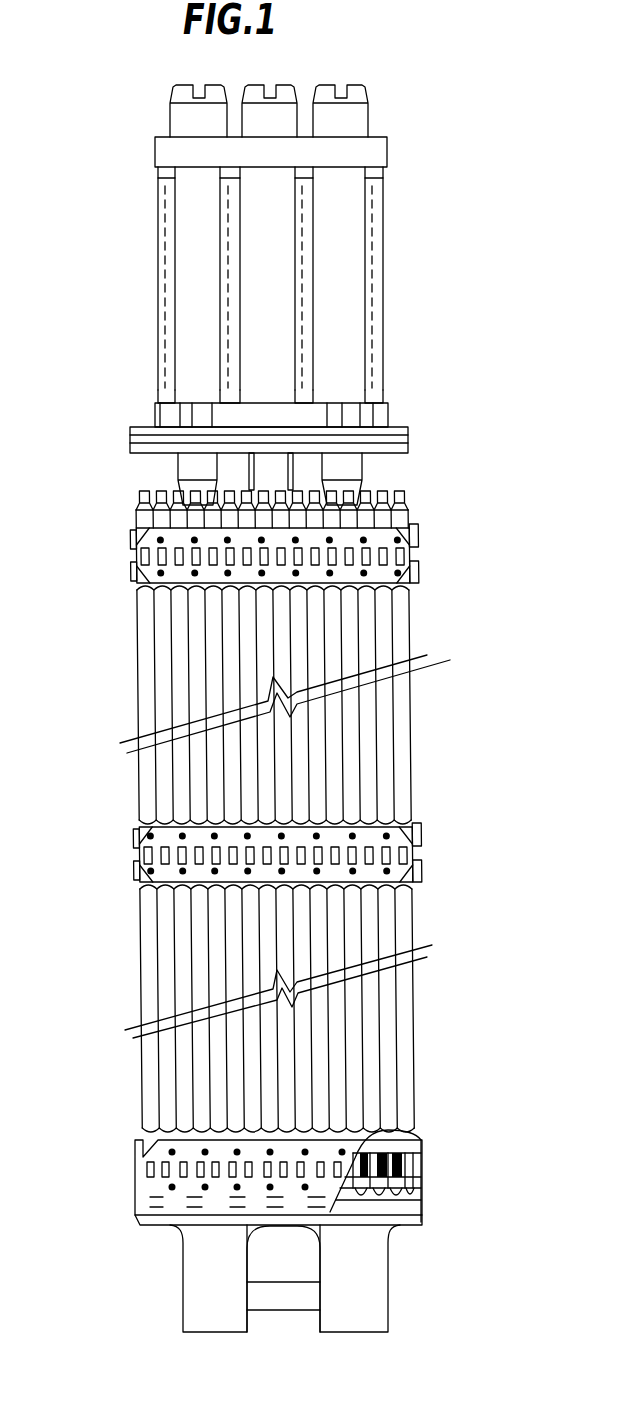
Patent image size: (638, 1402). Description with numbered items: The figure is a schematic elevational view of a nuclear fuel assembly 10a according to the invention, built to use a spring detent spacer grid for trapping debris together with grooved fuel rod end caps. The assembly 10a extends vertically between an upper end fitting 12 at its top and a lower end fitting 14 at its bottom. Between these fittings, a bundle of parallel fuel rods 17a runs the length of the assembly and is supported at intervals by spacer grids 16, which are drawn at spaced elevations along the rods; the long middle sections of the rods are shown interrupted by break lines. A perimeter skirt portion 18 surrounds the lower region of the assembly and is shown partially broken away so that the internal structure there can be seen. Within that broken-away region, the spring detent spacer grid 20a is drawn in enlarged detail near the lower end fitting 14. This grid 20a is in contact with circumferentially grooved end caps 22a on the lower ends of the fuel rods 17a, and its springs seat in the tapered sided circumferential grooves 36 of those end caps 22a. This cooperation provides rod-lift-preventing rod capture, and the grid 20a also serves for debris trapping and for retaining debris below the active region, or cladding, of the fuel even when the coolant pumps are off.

The fuel assembly 10a is at (118, 165).
The upper end fitting 12 is at (397, 430).
The spacer grids 16 is at (420, 553).
The fuel rods 17a is at (415, 1042).
The perimeter skirt portion 18 is at (150, 1183).
The spring detent spacer grid 20a is at (441, 1183).
The tapered sided circumferential grooves 36 is at (340, 1190).
The lower end fitting 14 is at (427, 1202).
The circumferentially grooved end caps 22a is at (392, 1227).